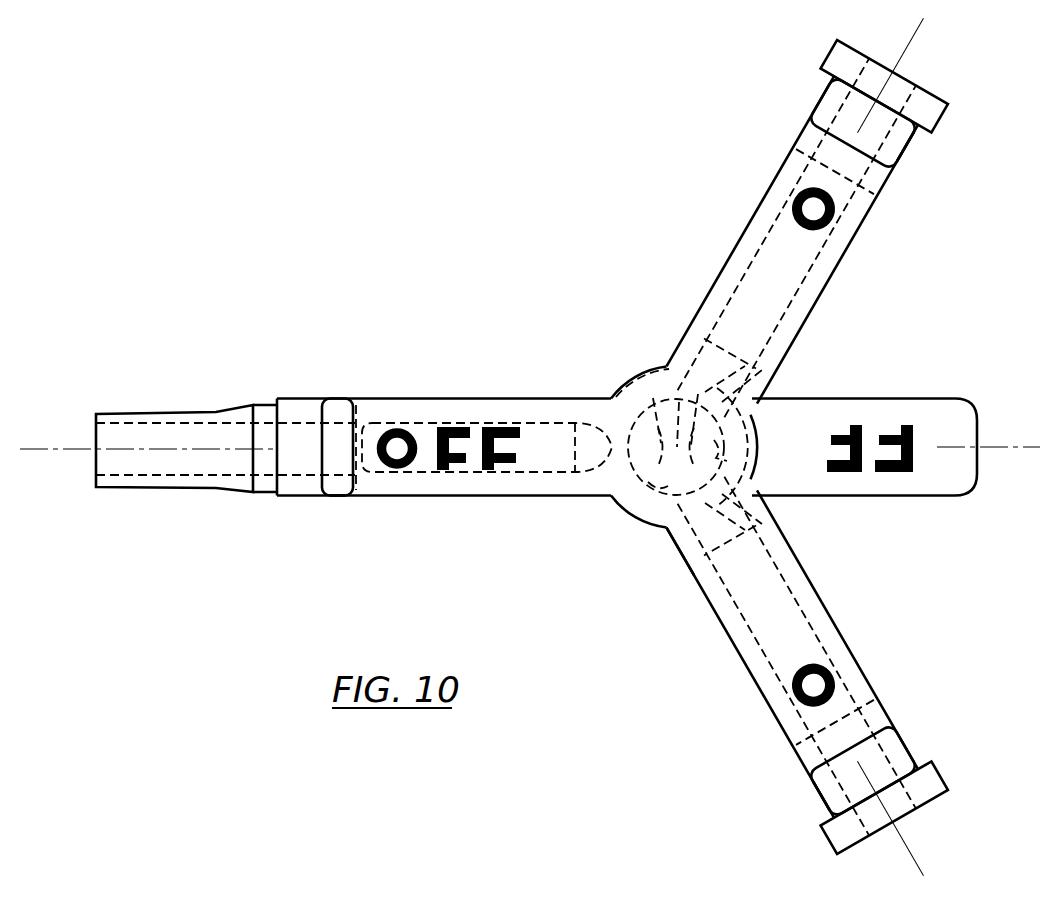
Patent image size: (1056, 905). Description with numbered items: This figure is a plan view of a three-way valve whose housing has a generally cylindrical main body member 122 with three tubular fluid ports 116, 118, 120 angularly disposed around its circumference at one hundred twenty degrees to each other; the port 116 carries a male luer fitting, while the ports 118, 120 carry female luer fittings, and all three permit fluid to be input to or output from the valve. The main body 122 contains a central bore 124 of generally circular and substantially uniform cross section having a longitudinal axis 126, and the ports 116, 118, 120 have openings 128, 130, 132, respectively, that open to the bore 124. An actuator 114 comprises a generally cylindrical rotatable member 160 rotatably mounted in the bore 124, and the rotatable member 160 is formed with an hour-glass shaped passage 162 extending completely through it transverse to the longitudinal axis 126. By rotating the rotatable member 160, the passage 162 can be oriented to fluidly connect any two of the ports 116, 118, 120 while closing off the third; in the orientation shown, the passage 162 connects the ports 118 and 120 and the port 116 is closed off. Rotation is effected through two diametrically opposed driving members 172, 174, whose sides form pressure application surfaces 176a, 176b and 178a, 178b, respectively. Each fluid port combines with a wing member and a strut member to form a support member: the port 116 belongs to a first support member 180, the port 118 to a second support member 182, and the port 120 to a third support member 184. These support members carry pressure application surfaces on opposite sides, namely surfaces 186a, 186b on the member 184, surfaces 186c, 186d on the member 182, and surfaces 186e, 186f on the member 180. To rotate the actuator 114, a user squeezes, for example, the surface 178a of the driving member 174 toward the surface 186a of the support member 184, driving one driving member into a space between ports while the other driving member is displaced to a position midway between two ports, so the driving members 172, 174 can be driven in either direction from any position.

The actuator 114 is at (900, 504).
The tubular fluid port 116 is at (292, 497).
The tubular fluid port 118 is at (826, 90).
The tubular fluid port 120 is at (813, 782).
The main body member 122 is at (634, 518).
The central bore 124 is at (672, 535).
The longitudinal axis 126 is at (655, 362).
The opening 128 is at (620, 458).
The opening 130 is at (784, 370).
The opening 132 is at (762, 527).
The rotatable member 160 is at (756, 461).
The hour-glass shaped passage 162 is at (617, 380).
The driving member 172 is at (452, 481).
The driving member 174 is at (855, 486).
The pressure application surface 176a is at (398, 398).
The pressure application surface 176b is at (401, 498).
The pressure application surface 178a is at (931, 398).
The pressure application surface 178b is at (925, 497).
The first support member 180 is at (361, 396).
The second support member 182 is at (786, 148).
The third support member 184 is at (872, 676).
The pressure application surface 186a is at (805, 768).
The pressure application surface 186b is at (886, 712).
The pressure application surface 186c is at (887, 176).
The pressure application surface 186d is at (804, 128).
The pressure application surface 186e is at (344, 397).
The pressure application surface 186f is at (339, 498).